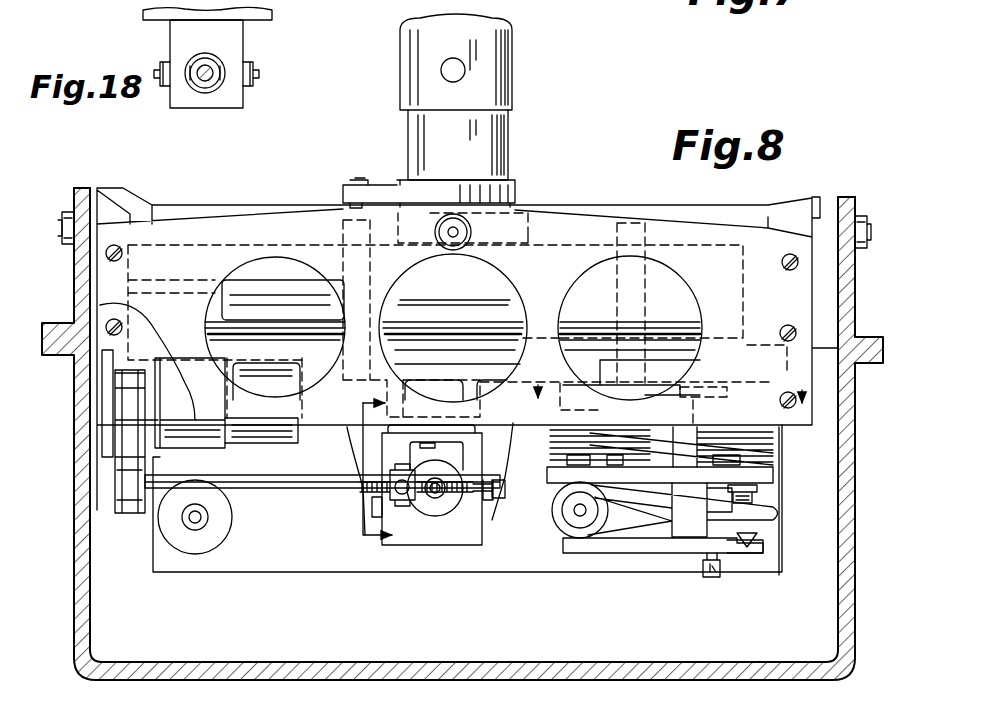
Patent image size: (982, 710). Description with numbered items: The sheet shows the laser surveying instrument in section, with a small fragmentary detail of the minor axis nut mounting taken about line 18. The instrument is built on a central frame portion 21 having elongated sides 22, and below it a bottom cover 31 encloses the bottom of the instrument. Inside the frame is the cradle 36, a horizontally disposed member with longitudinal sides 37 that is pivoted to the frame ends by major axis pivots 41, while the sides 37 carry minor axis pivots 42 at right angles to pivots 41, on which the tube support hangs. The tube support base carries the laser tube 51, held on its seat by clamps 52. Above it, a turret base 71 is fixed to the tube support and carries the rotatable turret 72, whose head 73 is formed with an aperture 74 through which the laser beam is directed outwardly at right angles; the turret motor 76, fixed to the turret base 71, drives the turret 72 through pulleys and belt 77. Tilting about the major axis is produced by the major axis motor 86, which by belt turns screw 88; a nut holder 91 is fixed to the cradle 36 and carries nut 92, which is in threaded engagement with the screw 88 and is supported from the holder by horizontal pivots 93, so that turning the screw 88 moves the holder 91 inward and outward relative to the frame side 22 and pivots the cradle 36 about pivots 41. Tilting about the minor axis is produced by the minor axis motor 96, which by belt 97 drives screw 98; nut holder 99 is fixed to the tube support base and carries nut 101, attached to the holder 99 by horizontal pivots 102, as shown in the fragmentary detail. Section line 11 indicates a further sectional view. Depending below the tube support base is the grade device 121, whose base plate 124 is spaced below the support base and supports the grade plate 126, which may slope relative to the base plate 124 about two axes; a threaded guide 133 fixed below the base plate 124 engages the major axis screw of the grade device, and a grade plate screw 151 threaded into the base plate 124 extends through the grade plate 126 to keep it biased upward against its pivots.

In FIG. 8, the section line 11 is at (687, 400).
In FIG. 8, the section line 18 is at (363, 468).
In FIG. 8, the central frame portion 21 is at (842, 290).
In FIG. 8, the elongated sides 22 is at (230, 572).
In FIG. 8, the bottom cover 31 is at (855, 455).
In FIG. 8, the cradle 36 is at (767, 300).
In FIG. 8, the longitudinal sides 37 is at (500, 430).
In FIG. 8, the major axis pivots 41 is at (62, 226).
In FIG. 8, the minor axis pivots 42 is at (455, 238).
In FIG. 8, the laser tube 51 is at (452, 297).
In FIG. 8, the clamps 52 is at (645, 285).
In FIG. 8, the turret base 71 is at (538, 235).
In FIG. 8, the turret 72 is at (508, 130).
In FIG. 8, the head 73 is at (512, 80).
In FIG. 8, the aperture 74 is at (465, 68).
In FIG. 8, the turret motor 76 is at (335, 285).
In FIG. 8, the pulleys and belt 77 is at (380, 180).
In FIG. 8, the major axis motor 86 is at (193, 555).
In FIG. 8, the screw 88 is at (445, 492).
In FIG. 8, the nut holder 91 is at (405, 545).
In FIG. 8, the nut 92 is at (438, 496).
In FIG. 8, the pivots 93 is at (505, 490).
In FIG. 8, the minor axis motor 96 is at (262, 437).
In FIG. 8, the belt 97 is at (132, 513).
In FIG. 18, the screw 98 is at (203, 82).
In FIG. 8, the screw 98 is at (270, 485).
In FIG. 18, the nut holder 99 is at (243, 98).
In FIG. 8, the nut holder 99 is at (372, 514).
In FIG. 18, the nut 101 is at (213, 85).
In FIG. 8, the nut 101 is at (430, 500).
In FIG. 18, the horizontal pivots 102 is at (222, 72).
In FIG. 8, the grade device 121 is at (637, 553).
In FIG. 8, the base plate 124 is at (765, 477).
In FIG. 8, the grade plate 126 is at (720, 565).
In FIG. 8, the threaded guide 133 is at (690, 523).
In FIG. 8, the grade plate screw 151 is at (745, 560).